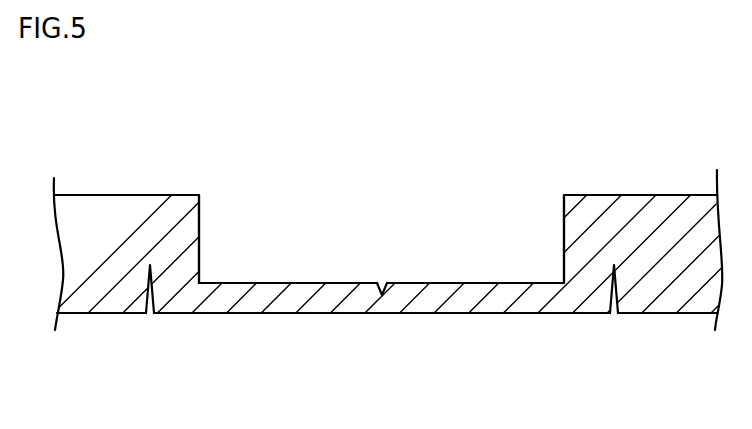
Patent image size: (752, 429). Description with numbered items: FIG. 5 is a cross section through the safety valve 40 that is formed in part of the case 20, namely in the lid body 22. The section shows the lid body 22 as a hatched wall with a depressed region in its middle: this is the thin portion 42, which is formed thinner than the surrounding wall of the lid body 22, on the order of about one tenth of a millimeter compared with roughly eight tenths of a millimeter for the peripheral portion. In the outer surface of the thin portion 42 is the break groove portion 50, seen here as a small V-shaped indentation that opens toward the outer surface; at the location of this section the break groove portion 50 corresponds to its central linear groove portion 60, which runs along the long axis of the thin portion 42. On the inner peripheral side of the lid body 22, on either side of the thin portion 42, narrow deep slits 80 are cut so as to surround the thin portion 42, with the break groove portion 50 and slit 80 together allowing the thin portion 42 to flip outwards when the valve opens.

The case 20 is at (671, 190).
The lid body 22 is at (130, 194).
The safety valve 40 is at (497, 223).
The thin portion 42 is at (265, 283).
The break groove portion 50 is at (417, 235).
The central linear groove portion 60 is at (382, 275).
The slit 80 is at (151, 318).